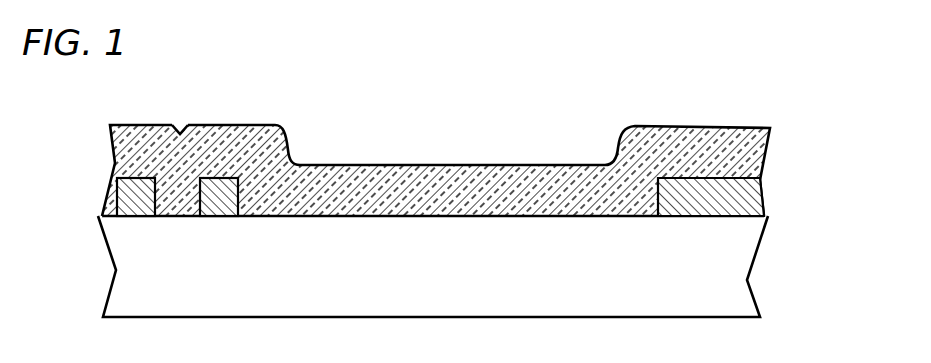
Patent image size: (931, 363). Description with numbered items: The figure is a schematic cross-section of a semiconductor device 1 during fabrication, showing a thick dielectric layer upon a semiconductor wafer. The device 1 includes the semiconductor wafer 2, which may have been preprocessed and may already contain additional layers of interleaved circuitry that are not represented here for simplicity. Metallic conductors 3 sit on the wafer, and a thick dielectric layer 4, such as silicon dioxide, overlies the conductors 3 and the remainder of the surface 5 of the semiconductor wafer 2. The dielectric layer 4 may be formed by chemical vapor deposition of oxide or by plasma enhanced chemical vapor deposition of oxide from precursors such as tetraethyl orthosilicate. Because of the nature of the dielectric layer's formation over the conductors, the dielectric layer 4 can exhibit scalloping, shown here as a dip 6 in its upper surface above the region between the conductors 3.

The semiconductor device 1 is at (484, 104).
The semiconductor wafer 2 is at (747, 282).
The metallic conductors 3 is at (116, 193).
The thick dielectric layer 4 is at (770, 128).
The surface 5 is at (430, 217).
The dip 6 is at (184, 123).